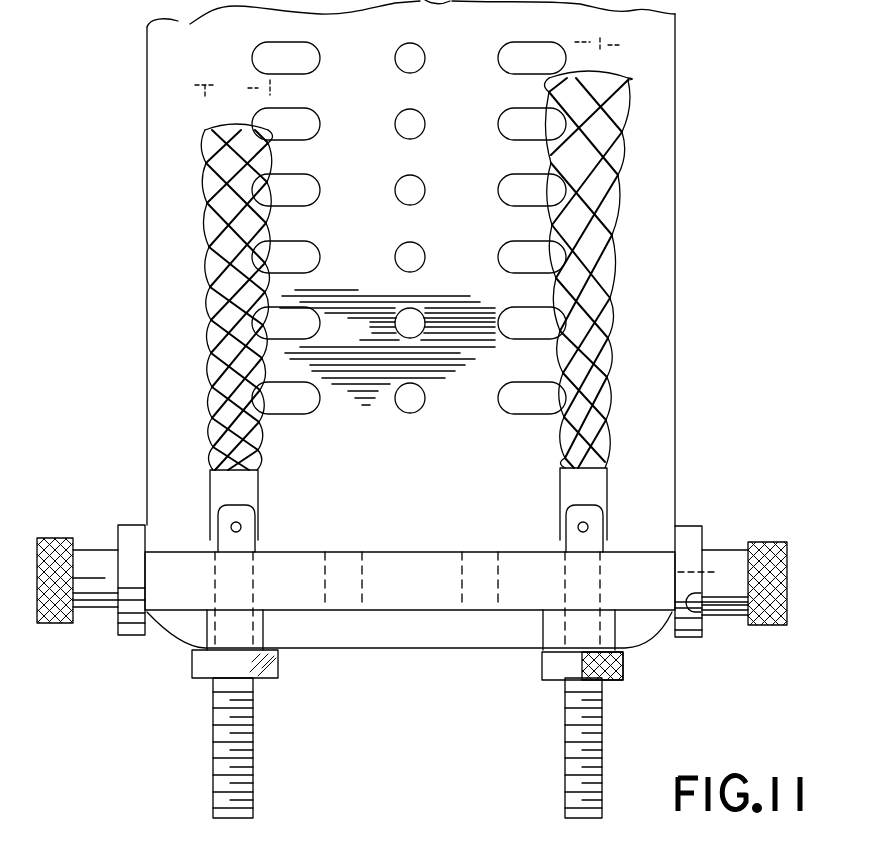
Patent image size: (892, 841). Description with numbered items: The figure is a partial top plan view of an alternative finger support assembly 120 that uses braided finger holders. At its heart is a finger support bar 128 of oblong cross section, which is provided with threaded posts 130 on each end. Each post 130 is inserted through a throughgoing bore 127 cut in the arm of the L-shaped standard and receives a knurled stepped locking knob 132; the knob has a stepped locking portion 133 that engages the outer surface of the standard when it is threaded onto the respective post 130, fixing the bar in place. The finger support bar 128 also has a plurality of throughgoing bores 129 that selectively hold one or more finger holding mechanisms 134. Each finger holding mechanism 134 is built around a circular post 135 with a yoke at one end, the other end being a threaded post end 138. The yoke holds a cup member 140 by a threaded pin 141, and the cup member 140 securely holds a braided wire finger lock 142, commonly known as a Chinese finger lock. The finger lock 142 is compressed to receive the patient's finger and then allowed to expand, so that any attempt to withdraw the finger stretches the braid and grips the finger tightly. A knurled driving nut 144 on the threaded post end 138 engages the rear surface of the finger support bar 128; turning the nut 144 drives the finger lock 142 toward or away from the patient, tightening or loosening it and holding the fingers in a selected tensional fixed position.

The finger support assembly 120 is at (706, 113).
The throughgoing bore 127 is at (703, 612).
The finger support bar 128 is at (413, 600).
The throughgoing bores 129 is at (342, 600).
The threaded post 130 is at (730, 556).
The knurled stepped locking knob 132 is at (787, 587).
The stepped locking portion 133 is at (714, 580).
The finger holding mechanism 134 is at (208, 345).
The circular post 135 is at (560, 626).
The threaded post end 138 is at (603, 748).
The cup member 140 is at (596, 486).
The threaded pin 141 is at (578, 526).
The braided wire finger lock 142 is at (625, 207).
The knurled driving nut 144 is at (623, 668).